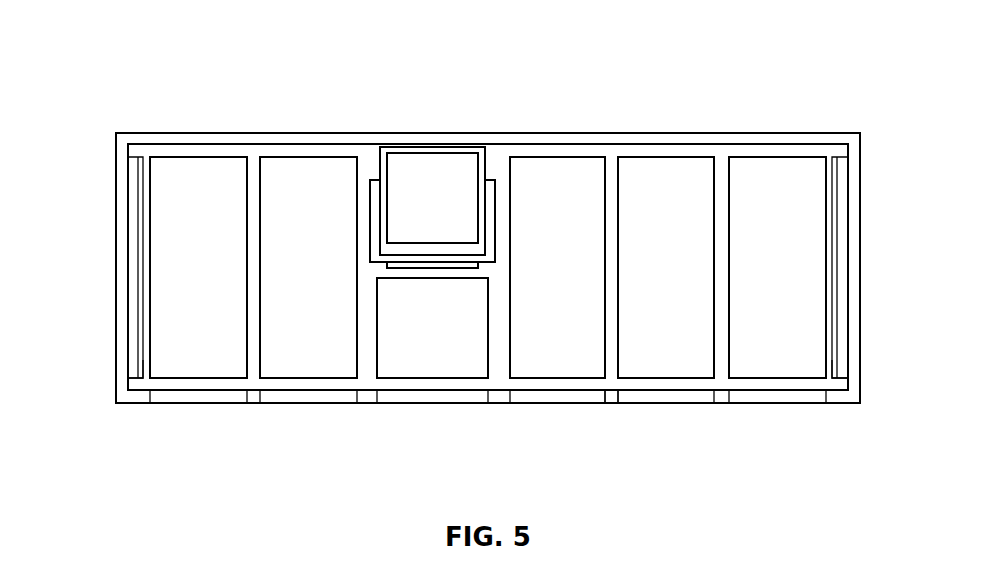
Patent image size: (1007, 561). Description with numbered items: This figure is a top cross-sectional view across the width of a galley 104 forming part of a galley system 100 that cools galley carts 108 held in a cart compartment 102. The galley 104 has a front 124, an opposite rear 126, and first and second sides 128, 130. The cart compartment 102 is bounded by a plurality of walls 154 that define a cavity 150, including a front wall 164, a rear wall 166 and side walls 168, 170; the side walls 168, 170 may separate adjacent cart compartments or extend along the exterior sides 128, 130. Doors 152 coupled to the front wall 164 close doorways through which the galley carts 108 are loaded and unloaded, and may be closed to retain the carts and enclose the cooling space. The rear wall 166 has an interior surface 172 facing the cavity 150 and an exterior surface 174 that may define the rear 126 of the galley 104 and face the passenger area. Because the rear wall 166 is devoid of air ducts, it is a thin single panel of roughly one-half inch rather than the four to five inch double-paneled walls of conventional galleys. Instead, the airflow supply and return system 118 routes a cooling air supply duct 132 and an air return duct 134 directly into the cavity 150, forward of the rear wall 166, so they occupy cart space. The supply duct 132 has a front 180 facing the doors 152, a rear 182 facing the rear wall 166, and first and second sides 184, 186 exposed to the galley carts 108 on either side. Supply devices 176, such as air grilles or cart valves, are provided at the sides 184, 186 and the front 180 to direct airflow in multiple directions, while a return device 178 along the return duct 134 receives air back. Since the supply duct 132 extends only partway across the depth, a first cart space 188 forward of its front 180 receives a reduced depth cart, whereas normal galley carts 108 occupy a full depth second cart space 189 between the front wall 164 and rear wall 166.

The galley system 100 is at (708, 77).
The cart compartment 102 is at (722, 150).
The galley 104 is at (287, 408).
The galley cart 108 is at (200, 370).
The airflow supply and return system 118 is at (437, 188).
The front 124 is at (592, 400).
The rear 126 is at (612, 133).
The first side 128 is at (860, 243).
The second side 130 is at (115, 257).
The cooling air supply duct 132 is at (408, 188).
The air return duct 134 is at (133, 200).
The cavity 150 is at (553, 383).
The door 152 is at (672, 400).
The walls 154 is at (855, 318).
The front wall 164 is at (833, 403).
The rear wall 166 is at (797, 132).
The side wall 168 is at (855, 283).
The side wall 170 is at (122, 323).
The interior surface 172 is at (548, 145).
The exterior surface 174 is at (525, 133).
The supply device 176 is at (375, 207).
The return device 178 is at (143, 363).
The front 180 is at (447, 265).
The rear 182 is at (430, 148).
The first side 184 is at (487, 175).
The second side 186 is at (370, 170).
The first cart space 188 is at (473, 383).
The second cart space 189 is at (312, 383).